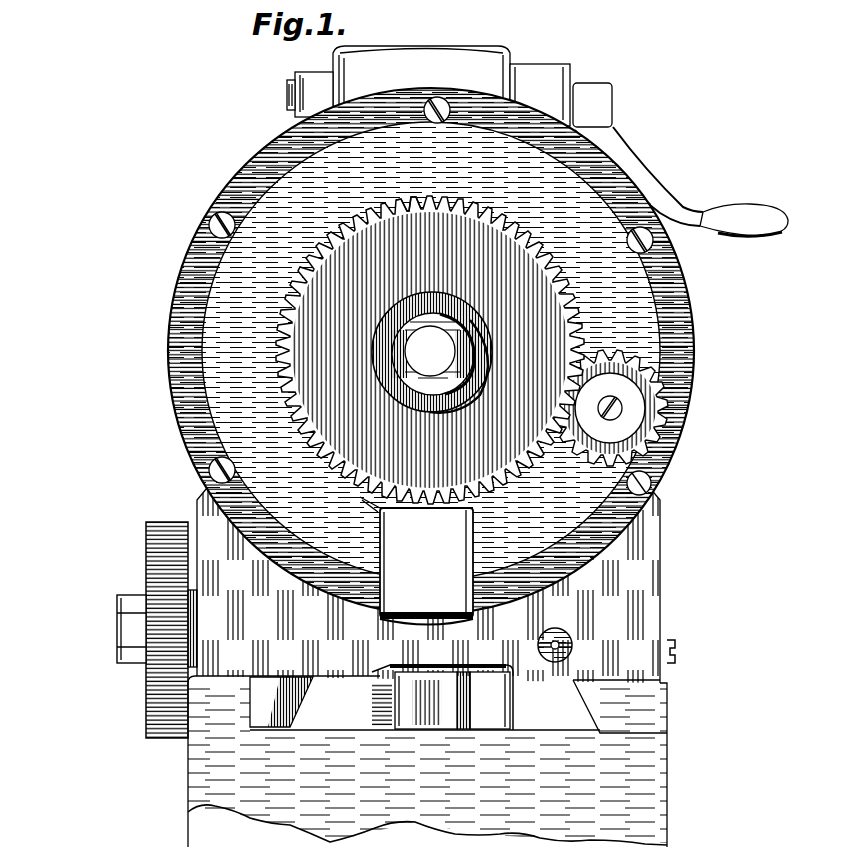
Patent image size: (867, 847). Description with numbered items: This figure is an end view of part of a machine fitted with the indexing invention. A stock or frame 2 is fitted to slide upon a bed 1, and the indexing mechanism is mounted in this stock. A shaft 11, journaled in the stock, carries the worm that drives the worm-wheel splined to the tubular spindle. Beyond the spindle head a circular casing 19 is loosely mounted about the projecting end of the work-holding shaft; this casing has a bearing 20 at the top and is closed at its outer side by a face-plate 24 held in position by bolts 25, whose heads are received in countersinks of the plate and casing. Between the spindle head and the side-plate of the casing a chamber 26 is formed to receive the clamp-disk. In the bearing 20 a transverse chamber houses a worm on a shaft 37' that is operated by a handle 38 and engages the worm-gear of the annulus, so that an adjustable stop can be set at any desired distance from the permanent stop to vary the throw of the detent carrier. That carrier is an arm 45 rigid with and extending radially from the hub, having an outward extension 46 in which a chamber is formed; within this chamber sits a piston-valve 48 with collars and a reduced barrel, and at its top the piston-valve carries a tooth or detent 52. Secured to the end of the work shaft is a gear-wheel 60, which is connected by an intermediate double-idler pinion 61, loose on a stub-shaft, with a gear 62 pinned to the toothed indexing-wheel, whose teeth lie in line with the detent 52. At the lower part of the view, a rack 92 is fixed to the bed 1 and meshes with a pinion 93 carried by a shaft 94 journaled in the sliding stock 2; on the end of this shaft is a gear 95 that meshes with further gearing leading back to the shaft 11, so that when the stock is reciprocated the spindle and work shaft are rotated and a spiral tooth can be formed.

The bed 1 is at (427, 761).
The stock or frame 2 is at (428, 585).
The shaft 11 is at (391, 339).
The circular casing 19 is at (183, 313).
The bearing 20 is at (453, 86).
The face-plate 24 is at (430, 345).
The bolts 25 is at (451, 112).
The chamber 26 is at (652, 486).
The shaft 37' is at (257, 89).
The handle 38 is at (752, 207).
The arm 45 is at (360, 502).
The outward extension 46 is at (426, 563).
The piston-valve 48 is at (420, 628).
The tooth or detent 52 is at (428, 510).
The gear-wheel 60 is at (386, 203).
The intermediate double-idler pinion 61 is at (692, 371).
The gear 62 is at (427, 826).
The rack 92 is at (423, 722).
The pinion 93 is at (465, 690).
The shaft 94 is at (117, 634).
The gear 95 is at (146, 570).